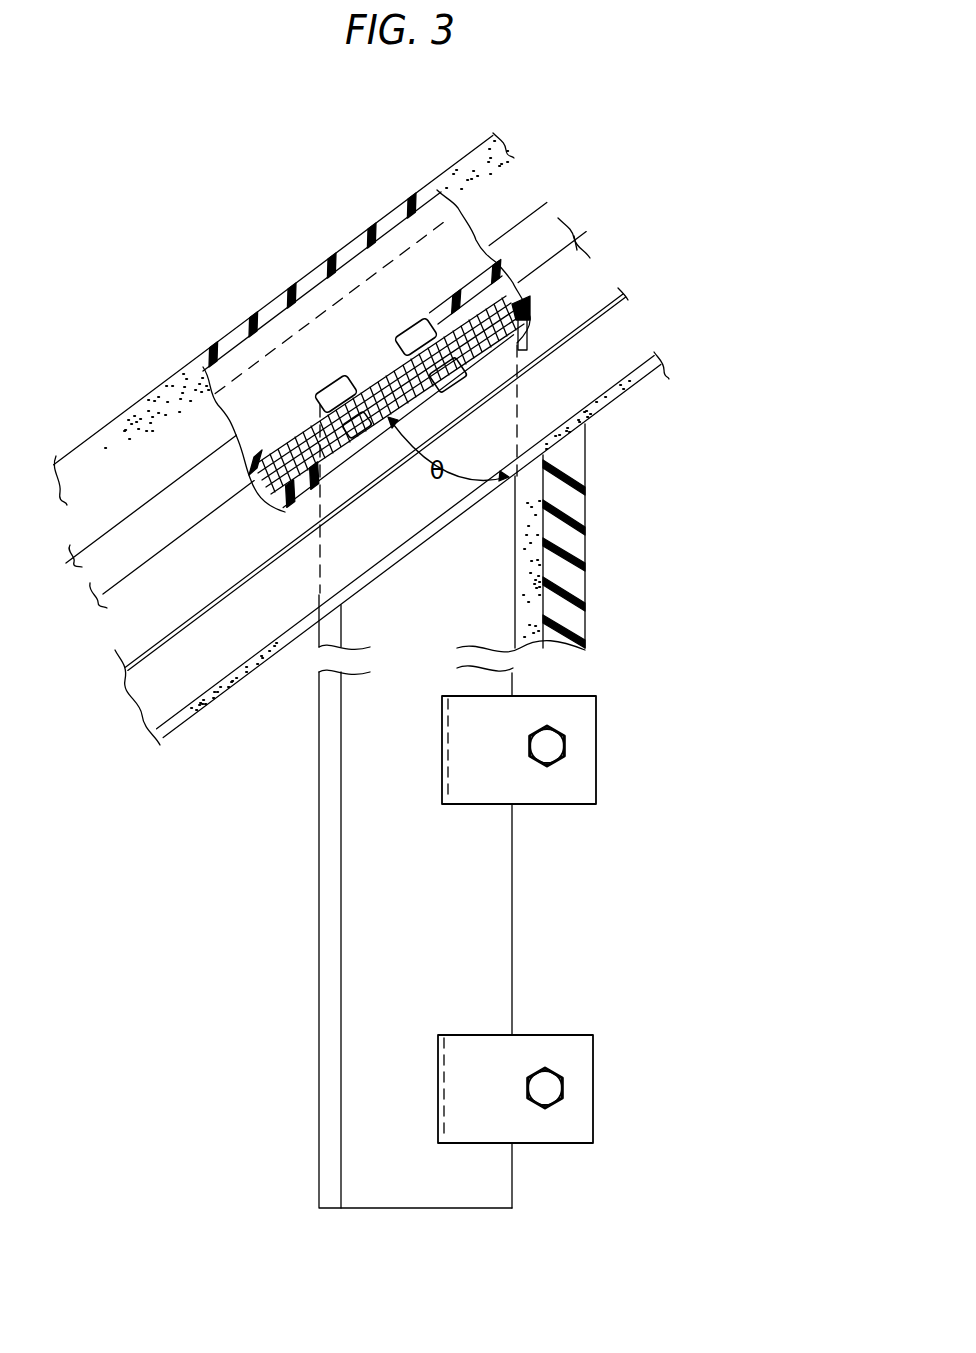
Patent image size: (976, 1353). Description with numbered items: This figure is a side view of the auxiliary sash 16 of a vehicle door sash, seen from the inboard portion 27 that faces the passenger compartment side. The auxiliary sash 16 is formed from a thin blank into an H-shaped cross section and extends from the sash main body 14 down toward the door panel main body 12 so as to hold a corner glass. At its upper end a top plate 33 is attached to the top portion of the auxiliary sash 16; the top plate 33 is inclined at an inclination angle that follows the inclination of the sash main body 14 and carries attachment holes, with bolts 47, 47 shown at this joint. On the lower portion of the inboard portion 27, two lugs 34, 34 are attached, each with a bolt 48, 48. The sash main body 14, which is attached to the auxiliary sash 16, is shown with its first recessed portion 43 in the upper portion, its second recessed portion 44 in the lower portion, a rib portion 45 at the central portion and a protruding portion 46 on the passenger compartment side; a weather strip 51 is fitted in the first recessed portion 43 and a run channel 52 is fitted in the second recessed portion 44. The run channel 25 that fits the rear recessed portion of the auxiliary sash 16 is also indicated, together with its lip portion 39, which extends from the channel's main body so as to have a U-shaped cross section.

The door panel main body 12 is at (585, 870).
The sash main body 14 is at (626, 287).
The auxiliary sash 16 is at (306, 825).
The run channel 25 is at (587, 540).
The inboard portion 27 is at (382, 630).
The top plate 33 is at (480, 330).
The lugs 34 is at (597, 717).
The lip portion 39 is at (587, 620).
The first recessed portion 43 is at (377, 368).
The second recessed portion 44 is at (310, 490).
The rib portion 45 is at (372, 367).
The protruding portion 46 is at (586, 370).
The bolts 47 is at (240, 364).
The bolts 48 is at (567, 747).
The weather strip 51 is at (132, 407).
The run channel 52 is at (603, 420).